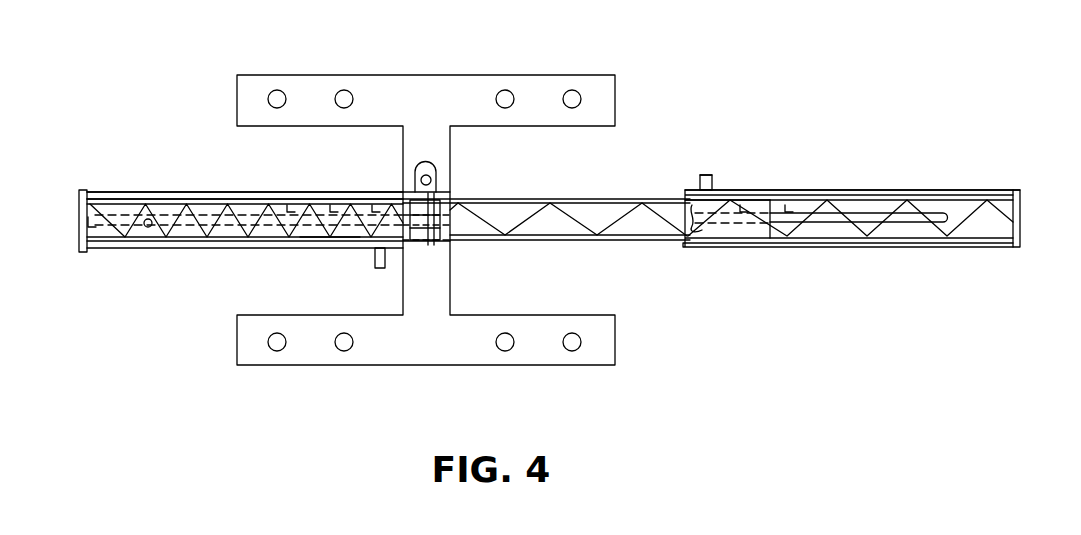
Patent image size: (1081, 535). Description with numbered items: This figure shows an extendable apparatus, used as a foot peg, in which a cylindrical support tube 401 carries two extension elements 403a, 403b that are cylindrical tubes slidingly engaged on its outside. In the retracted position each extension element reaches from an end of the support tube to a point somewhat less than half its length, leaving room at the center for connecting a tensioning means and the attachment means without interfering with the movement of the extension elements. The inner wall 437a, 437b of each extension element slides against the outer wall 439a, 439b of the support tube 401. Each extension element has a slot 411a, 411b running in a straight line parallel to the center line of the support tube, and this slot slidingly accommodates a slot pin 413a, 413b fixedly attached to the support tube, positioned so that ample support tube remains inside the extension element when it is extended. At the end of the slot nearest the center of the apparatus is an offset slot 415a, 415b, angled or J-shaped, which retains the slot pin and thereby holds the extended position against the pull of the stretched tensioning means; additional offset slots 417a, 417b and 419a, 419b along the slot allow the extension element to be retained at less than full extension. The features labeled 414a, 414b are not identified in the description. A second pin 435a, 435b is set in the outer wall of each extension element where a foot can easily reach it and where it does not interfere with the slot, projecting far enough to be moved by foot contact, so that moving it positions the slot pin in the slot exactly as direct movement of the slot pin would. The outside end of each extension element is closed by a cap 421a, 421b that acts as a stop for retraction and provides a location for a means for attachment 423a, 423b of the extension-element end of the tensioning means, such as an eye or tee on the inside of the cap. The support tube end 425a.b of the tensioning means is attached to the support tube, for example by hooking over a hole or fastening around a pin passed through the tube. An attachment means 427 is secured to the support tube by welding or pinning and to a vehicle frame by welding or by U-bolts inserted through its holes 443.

The support tube 401 is at (622, 202).
The extension element 403a is at (255, 211).
The extension element 403b is at (836, 207).
The slot 411a is at (253, 203).
The slot 411b is at (835, 237).
The slot pin 413a is at (172, 255).
The slot pin 413b is at (703, 248).
The left zigzag web member 414a is at (268, 246).
The right zigzag web member 414b is at (800, 246).
The offset slot 415a is at (377, 203).
The offset slot 415b is at (684, 190).
The additional offset slot 417a is at (340, 203).
The additional offset slot 417b is at (745, 190).
The additional offset slot 419a is at (295, 203).
The additional offset slot 419b is at (785, 190).
The cap 421a is at (81, 251).
The cap 421b is at (1022, 247).
The means for attachment 423a is at (103, 205).
The means for attachment 423b is at (1003, 246).
The support tube end of the tensioning means 425a.b is at (442, 192).
The attachment means 427 is at (595, 75).
The second pin 435a is at (373, 268).
The second pin 435b is at (715, 190).
The inner wall 437a is at (327, 248).
The inner wall 437b is at (868, 202).
The outer wall 439a is at (215, 203).
The outer wall 439b is at (628, 240).
The holes 443 is at (342, 92).